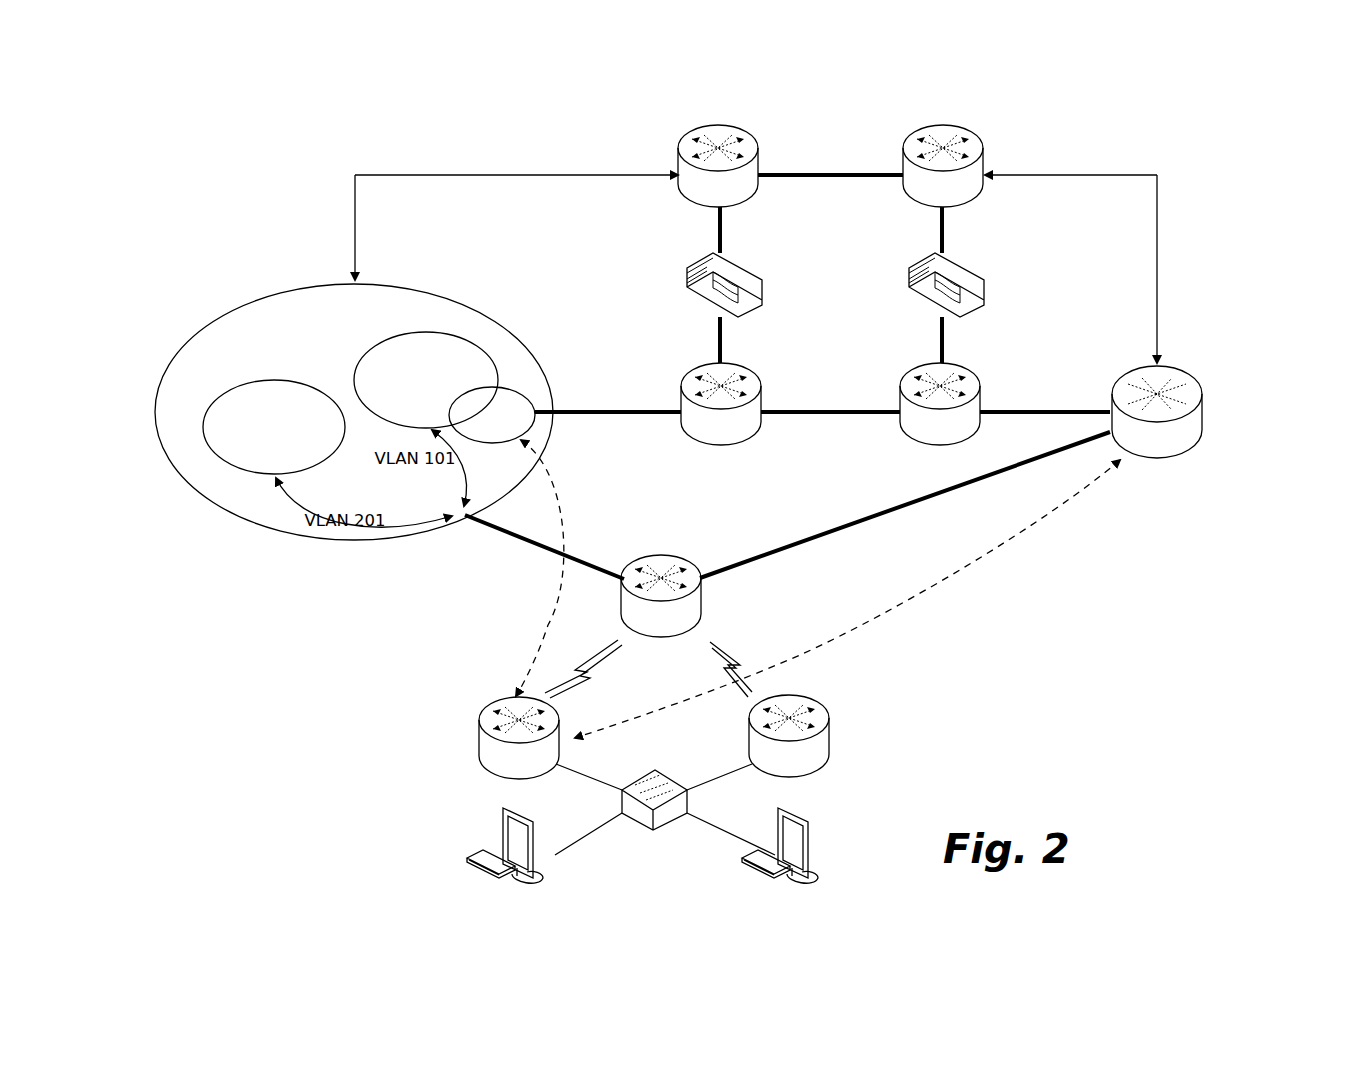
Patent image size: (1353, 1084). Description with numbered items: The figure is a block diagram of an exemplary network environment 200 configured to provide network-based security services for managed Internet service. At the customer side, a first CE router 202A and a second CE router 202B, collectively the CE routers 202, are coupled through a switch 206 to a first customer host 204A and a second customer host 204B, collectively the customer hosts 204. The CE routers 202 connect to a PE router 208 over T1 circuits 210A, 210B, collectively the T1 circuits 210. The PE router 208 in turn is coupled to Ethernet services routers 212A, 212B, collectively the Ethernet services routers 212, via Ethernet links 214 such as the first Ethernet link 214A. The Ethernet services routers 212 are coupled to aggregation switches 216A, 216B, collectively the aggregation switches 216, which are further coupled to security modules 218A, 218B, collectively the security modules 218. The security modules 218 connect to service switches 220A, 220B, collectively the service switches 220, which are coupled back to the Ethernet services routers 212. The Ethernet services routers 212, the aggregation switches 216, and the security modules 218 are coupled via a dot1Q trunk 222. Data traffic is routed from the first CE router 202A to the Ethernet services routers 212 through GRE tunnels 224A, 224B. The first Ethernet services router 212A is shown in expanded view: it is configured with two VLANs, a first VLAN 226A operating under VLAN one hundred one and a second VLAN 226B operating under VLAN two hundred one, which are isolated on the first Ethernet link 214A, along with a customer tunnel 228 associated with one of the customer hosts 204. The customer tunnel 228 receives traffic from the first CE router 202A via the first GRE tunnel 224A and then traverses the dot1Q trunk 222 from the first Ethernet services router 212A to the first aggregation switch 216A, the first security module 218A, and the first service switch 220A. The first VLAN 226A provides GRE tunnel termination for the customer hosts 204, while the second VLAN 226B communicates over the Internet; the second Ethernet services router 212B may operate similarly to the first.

The network environment 200 is at (1193, 142).
The CE routers 202 is at (313, 750).
The first CE router 202A is at (468, 738).
The second CE router 202B is at (840, 736).
The customer hosts 204 is at (321, 838).
The first customer host 204A is at (505, 865).
The second customer host 204B is at (780, 868).
The switch 206 is at (665, 809).
The PE router 208 is at (661, 572).
The T1 circuits 210 is at (313, 688).
The first T1 circuit 210A is at (588, 685).
The second T1 circuit 210B is at (725, 662).
The Ethernet services routers 212 is at (212, 143).
The first Ethernet services router 212A is at (414, 385).
The second Ethernet services router 212B is at (1180, 356).
The Ethernet links 214 is at (212, 177).
The first Ethernet link 214A is at (525, 540).
The aggregation switches 216 is at (212, 217).
The first aggregation switch 216A is at (785, 401).
The second aggregation switch 216B is at (1004, 401).
The security modules 218 is at (212, 257).
The first security module 218A is at (789, 285).
The second security module 218B is at (1010, 285).
The service switches 220 is at (214, 297).
The first service switch 220A is at (778, 164).
The second service switch 220B is at (1030, 164).
The dot1Q trunk 222 is at (707, 338).
The first GRE tunnel 224A is at (540, 625).
The second GRE tunnel 224B is at (1010, 560).
The first VLAN 226A is at (426, 380).
The second VLAN 226B is at (274, 427).
The customer tunnel 228 is at (492, 415).